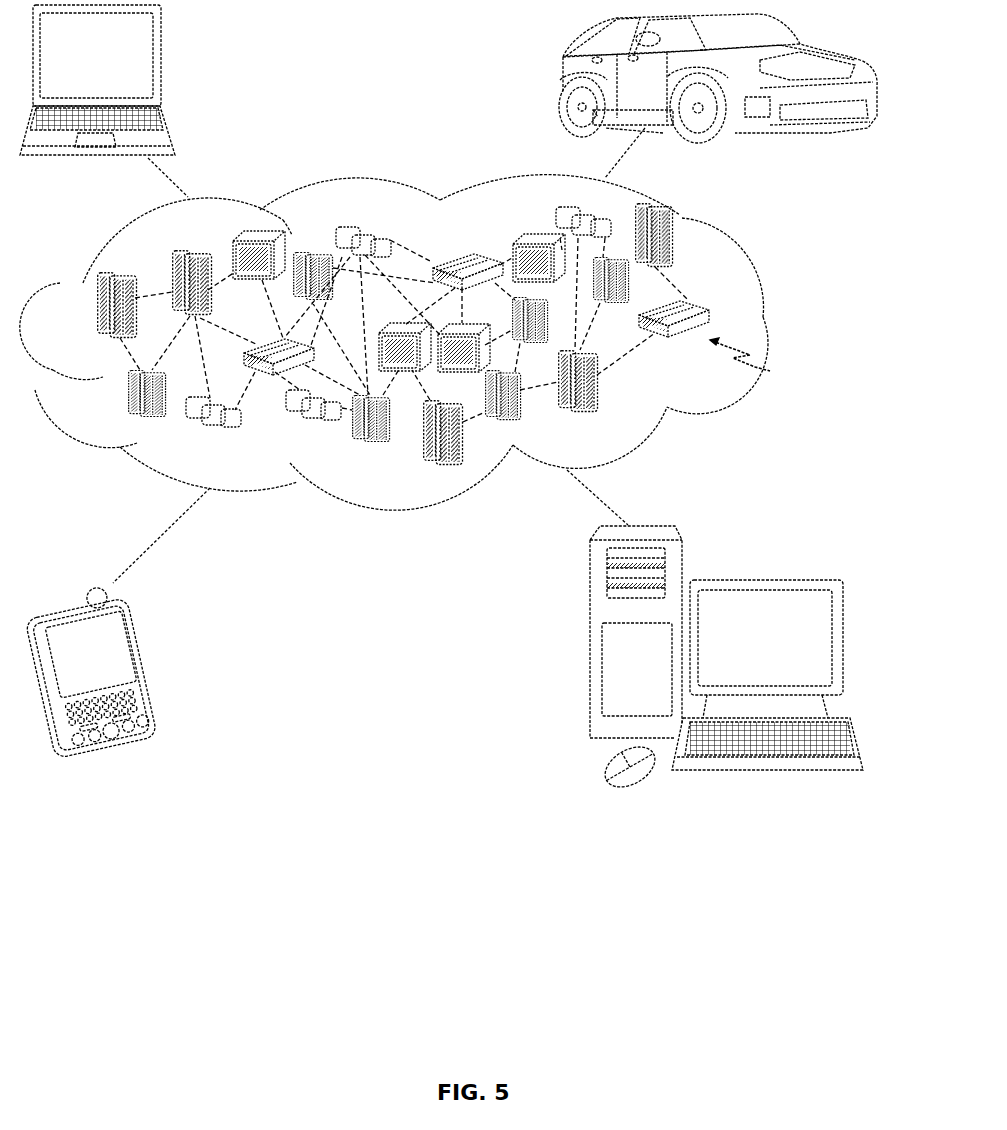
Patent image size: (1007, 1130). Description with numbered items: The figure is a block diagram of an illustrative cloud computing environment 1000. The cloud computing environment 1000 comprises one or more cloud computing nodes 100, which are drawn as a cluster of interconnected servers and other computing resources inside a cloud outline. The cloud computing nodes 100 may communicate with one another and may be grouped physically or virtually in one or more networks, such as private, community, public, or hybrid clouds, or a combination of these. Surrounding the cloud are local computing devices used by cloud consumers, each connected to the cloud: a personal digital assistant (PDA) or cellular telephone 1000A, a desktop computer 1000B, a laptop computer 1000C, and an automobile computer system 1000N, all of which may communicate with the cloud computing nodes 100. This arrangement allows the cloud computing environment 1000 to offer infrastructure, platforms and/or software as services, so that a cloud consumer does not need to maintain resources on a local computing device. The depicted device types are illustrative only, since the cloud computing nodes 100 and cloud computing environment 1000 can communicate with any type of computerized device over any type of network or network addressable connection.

The cloud computing environment 1000 is at (763, 316).
The cloud computing nodes 100 is at (759, 361).
The personal digital assistant (PDA) or cellular telephone 1000A is at (152, 668).
The desktop computer 1000B is at (765, 577).
The laptop computer 1000C is at (160, 63).
The automobile computer system 1000N is at (562, 80).